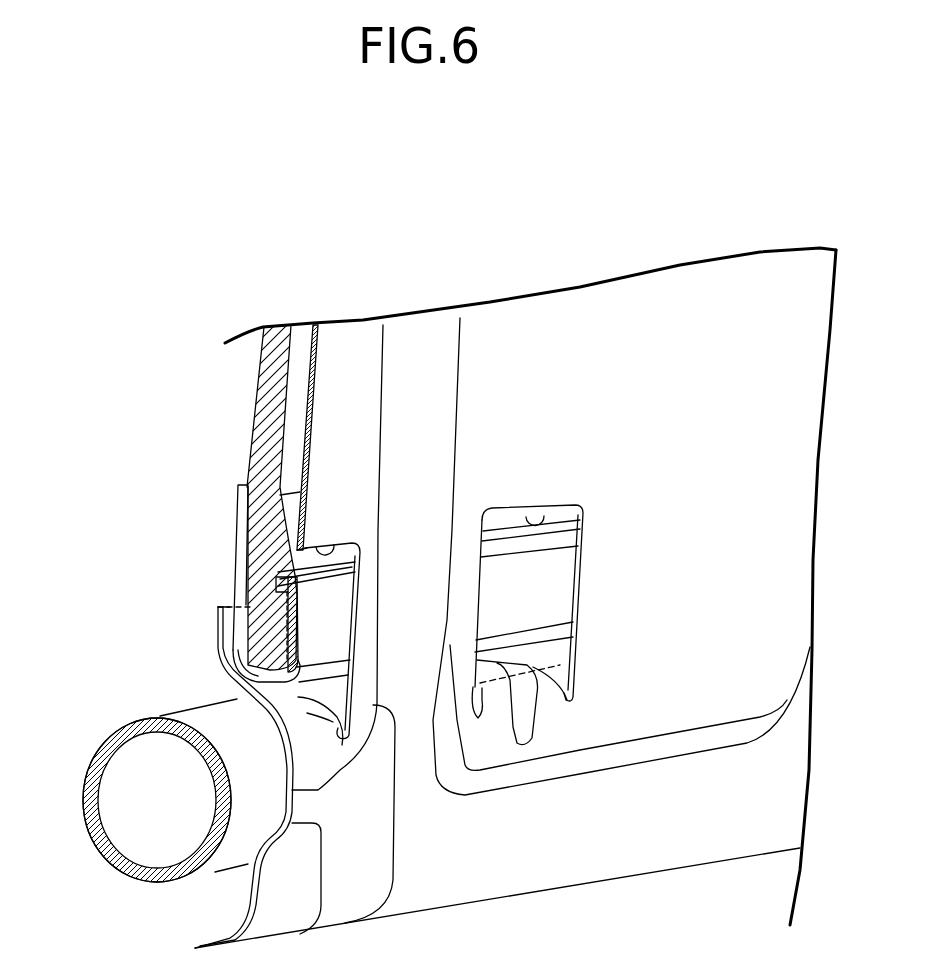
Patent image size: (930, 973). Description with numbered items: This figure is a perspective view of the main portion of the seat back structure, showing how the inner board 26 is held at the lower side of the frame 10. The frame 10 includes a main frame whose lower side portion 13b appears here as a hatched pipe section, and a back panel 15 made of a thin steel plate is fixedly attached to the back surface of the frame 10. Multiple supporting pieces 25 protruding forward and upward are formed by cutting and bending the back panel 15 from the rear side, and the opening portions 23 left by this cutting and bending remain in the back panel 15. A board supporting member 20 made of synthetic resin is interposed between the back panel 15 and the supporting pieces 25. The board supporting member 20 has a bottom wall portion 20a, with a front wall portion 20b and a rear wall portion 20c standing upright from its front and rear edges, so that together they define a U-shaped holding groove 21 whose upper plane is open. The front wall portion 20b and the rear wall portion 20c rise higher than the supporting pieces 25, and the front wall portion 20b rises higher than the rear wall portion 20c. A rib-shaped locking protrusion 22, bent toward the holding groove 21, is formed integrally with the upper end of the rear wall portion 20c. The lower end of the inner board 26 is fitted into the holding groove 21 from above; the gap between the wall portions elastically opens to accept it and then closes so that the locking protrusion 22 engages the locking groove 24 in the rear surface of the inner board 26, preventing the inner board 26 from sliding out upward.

The frame 10 is at (92, 742).
The lower side portion 13b is at (98, 833).
The back panel 15 is at (362, 340).
The board supporting member 20 is at (325, 619).
The bottom wall portion 20a is at (263, 684).
The front wall portion 20b is at (237, 533).
The rear wall portion 20c is at (300, 655).
The holding groove 21 is at (240, 660).
The locking protrusion 22 is at (277, 588).
The opening portion 23 is at (336, 548).
The locking groove 24 is at (330, 574).
The supporting piece 25 is at (215, 650).
The inner board 26 is at (282, 326).